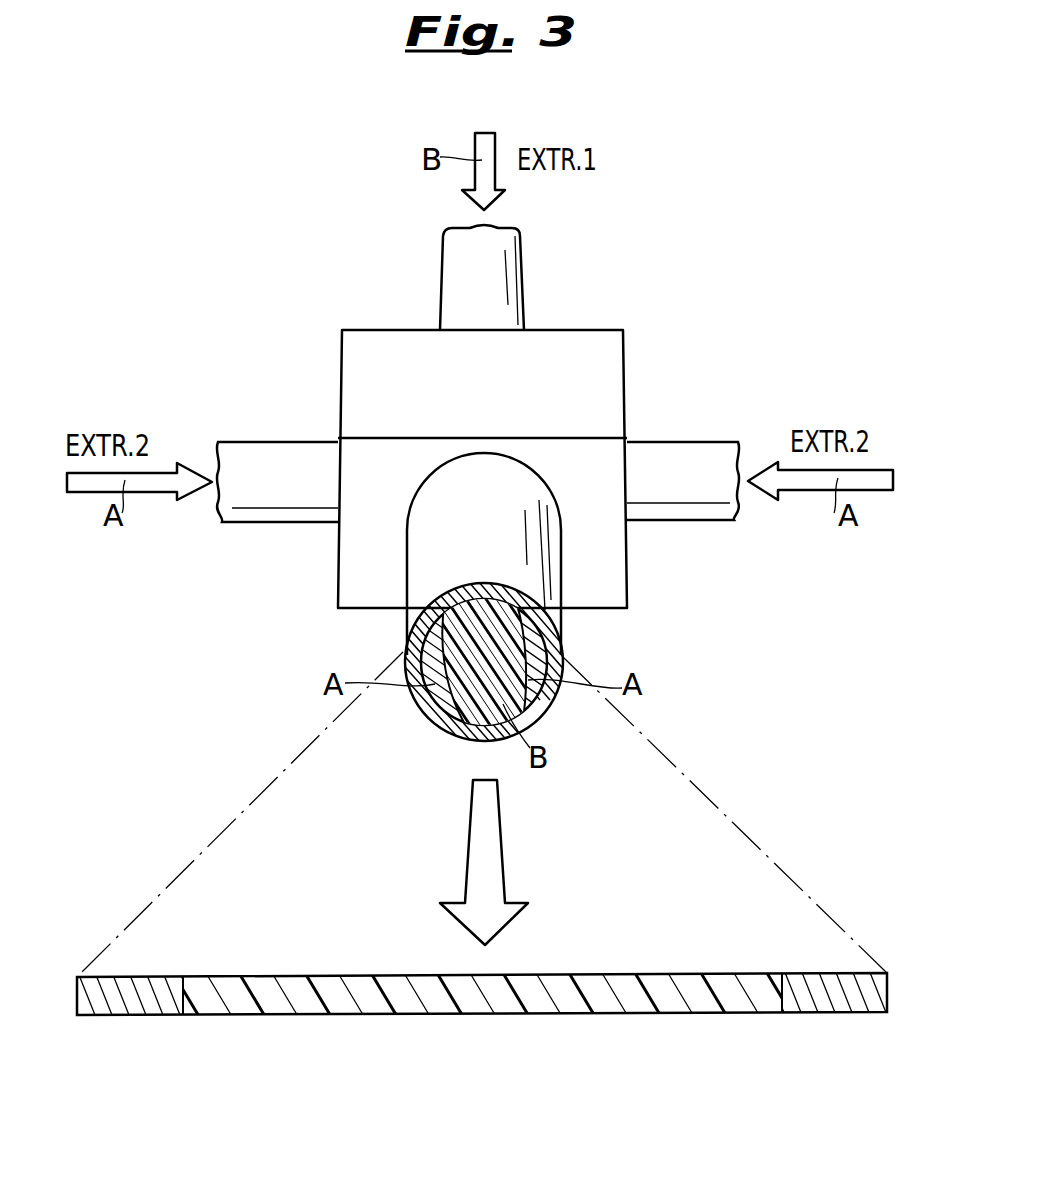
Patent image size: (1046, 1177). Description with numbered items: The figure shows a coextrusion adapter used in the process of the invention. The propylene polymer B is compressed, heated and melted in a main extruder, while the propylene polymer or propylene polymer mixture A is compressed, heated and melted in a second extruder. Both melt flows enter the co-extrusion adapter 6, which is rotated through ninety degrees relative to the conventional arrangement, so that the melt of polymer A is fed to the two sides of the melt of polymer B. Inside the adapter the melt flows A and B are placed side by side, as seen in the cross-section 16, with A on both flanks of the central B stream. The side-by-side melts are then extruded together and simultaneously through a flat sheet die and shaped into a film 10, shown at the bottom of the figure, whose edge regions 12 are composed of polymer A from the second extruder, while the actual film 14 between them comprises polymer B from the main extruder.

The co-extrusion adapter 6 is at (663, 567).
The film 10 is at (498, 1013).
The edge regions 12 is at (118, 997).
The actual film 14 is at (425, 1000).
The side-by-side arrangement of melt flows 16 is at (567, 657).